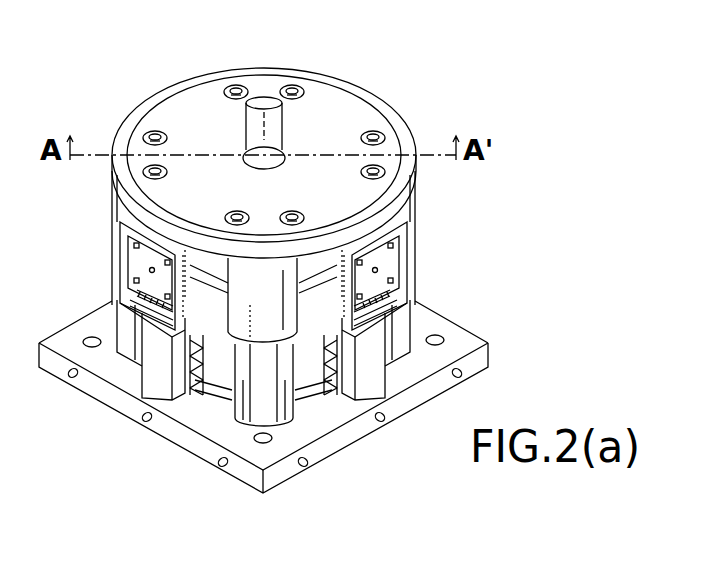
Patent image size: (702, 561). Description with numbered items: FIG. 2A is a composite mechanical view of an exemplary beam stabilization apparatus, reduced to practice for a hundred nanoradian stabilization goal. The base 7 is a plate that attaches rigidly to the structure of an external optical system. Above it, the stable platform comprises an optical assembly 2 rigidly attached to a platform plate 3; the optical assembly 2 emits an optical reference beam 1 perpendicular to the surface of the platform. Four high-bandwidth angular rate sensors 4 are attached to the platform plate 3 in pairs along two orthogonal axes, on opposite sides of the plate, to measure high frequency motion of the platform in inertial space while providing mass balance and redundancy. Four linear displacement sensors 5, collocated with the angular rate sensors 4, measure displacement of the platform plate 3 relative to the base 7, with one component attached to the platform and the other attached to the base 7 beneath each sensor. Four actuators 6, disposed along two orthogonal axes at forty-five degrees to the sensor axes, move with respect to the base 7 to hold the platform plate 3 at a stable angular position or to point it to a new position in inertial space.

The optical reference beam 1 is at (266, 100).
The optical assembly 2 is at (187, 110).
The platform plate 3 is at (130, 127).
The angular rate sensor 4 is at (120, 262).
The linear displacement sensor 5 is at (178, 392).
The actuator 6 is at (117, 213).
The base 7 is at (275, 482).